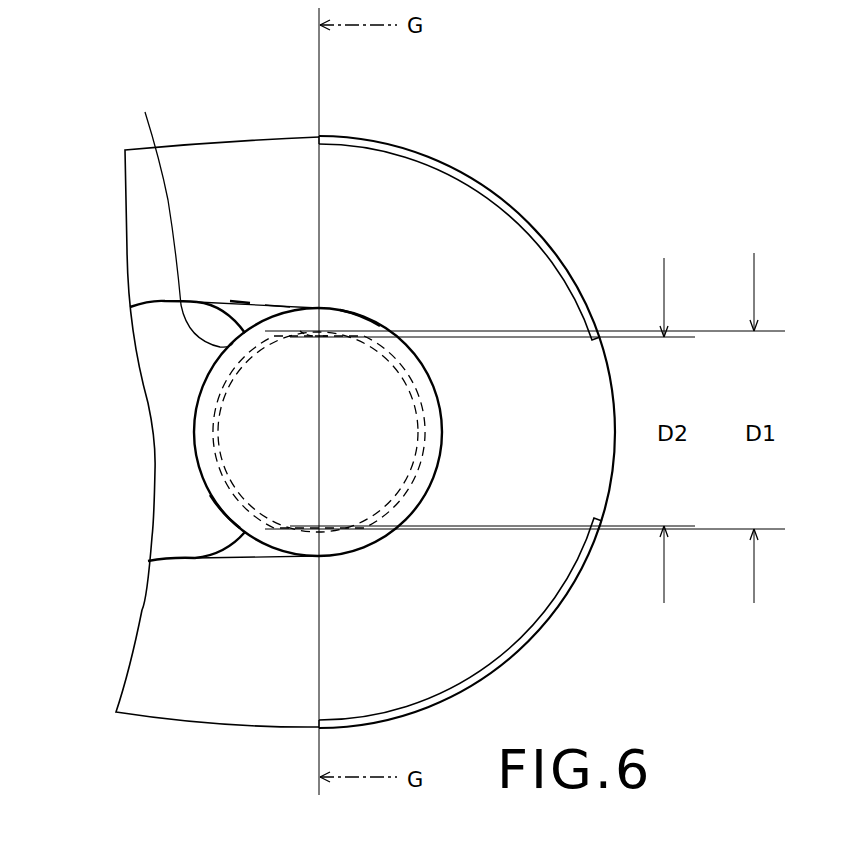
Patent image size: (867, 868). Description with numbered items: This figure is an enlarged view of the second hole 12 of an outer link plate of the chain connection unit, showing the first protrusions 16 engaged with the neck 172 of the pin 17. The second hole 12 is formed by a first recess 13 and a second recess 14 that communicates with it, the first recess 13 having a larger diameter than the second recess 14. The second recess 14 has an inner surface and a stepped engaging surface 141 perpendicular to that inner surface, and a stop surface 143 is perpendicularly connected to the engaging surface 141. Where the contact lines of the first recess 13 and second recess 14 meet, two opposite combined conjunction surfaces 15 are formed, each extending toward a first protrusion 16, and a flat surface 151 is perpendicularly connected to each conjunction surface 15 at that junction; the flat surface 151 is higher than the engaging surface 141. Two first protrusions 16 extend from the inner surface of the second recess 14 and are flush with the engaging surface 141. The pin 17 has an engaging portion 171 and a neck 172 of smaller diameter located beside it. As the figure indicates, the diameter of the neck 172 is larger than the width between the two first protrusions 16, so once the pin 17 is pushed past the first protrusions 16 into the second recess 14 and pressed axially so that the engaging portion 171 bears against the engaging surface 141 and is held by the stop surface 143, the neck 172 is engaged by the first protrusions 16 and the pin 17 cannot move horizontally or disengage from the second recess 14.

The second hole 12 is at (233, 527).
The first recess 13 is at (162, 347).
The second recess 14 is at (333, 322).
The engaging surface 141 is at (363, 320).
The stop surface 143 is at (277, 307).
The combined conjunction surface 15 is at (182, 216).
The flat surface 151 is at (240, 304).
The first protrusion 16 is at (321, 328).
The pin 17 is at (235, 416).
The engaging portion 171 is at (223, 502).
The neck 172 is at (220, 452).